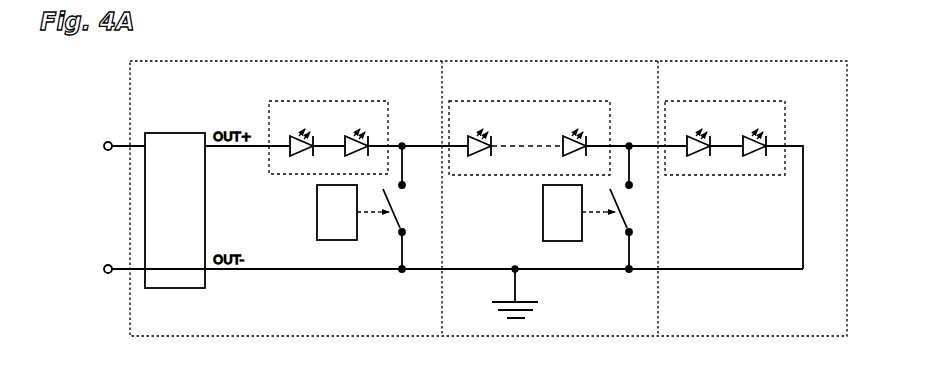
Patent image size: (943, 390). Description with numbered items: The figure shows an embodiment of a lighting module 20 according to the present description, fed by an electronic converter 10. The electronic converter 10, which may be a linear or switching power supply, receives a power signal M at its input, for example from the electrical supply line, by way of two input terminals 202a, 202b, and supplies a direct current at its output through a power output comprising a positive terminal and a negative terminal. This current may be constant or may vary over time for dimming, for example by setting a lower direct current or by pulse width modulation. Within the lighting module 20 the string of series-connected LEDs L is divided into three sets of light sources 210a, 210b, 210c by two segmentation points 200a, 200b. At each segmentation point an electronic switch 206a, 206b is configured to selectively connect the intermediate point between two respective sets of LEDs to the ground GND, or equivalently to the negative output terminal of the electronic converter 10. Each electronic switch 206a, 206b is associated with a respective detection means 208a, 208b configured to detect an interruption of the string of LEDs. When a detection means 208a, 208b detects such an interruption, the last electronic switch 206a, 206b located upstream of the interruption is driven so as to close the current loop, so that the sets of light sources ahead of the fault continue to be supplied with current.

The lighting module 20 is at (228, 51).
The electronic converter 10 is at (186, 128).
The positive input terminal 202a is at (107, 139).
The negative input terminal 202b is at (106, 276).
The power signal M is at (106, 195).
The first set of light sources 210a is at (367, 97).
The second set of light sources 210b is at (577, 100).
The third set of light sources 210c is at (762, 100).
The LED L is at (359, 112).
The first electronic switch 206a is at (410, 208).
The second electronic switch 206b is at (637, 209).
The first detection means 208a is at (338, 244).
The second detection means 208b is at (564, 245).
The ground GND is at (537, 320).
The first segmentation point 200a is at (444, 340).
The second segmentation point 200b is at (660, 340).